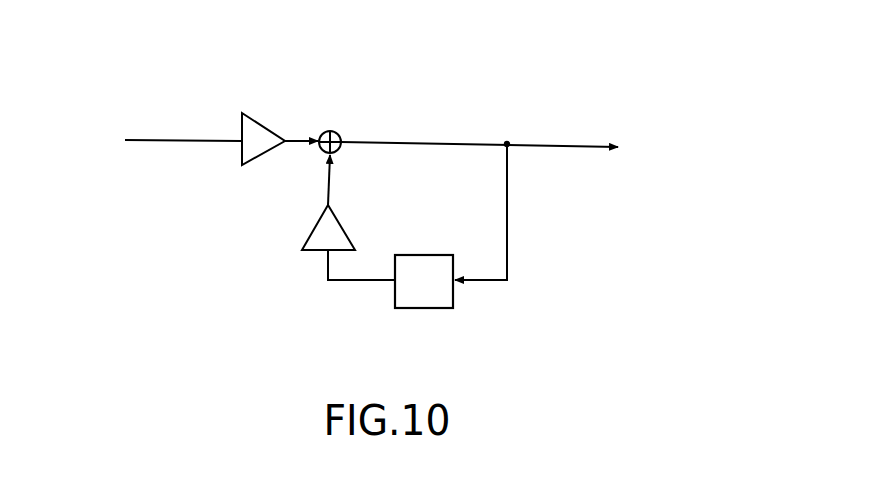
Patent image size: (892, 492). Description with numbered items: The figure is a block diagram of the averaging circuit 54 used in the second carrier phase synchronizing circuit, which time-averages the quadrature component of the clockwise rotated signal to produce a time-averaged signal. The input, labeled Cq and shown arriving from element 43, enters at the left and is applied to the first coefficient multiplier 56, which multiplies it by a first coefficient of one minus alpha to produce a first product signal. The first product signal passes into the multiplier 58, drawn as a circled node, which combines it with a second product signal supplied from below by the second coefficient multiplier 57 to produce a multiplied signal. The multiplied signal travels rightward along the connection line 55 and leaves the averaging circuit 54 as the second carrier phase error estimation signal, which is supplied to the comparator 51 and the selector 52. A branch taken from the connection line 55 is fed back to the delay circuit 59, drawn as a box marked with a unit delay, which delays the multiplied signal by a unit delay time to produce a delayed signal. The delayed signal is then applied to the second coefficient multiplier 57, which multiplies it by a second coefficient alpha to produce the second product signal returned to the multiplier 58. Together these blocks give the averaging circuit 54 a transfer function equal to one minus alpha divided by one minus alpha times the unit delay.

The averaging circuit 54 is at (453, 85).
The connection line 55 is at (565, 148).
The first coefficient multiplier 56 is at (242, 156).
The second coefficient multiplier 57 is at (310, 233).
The multiplier 58 is at (335, 131).
The delay circuit 59 is at (418, 254).
The input source 43 is at (130, 132).
The comparator 51 is at (665, 147).
The selector 52 is at (726, 147).